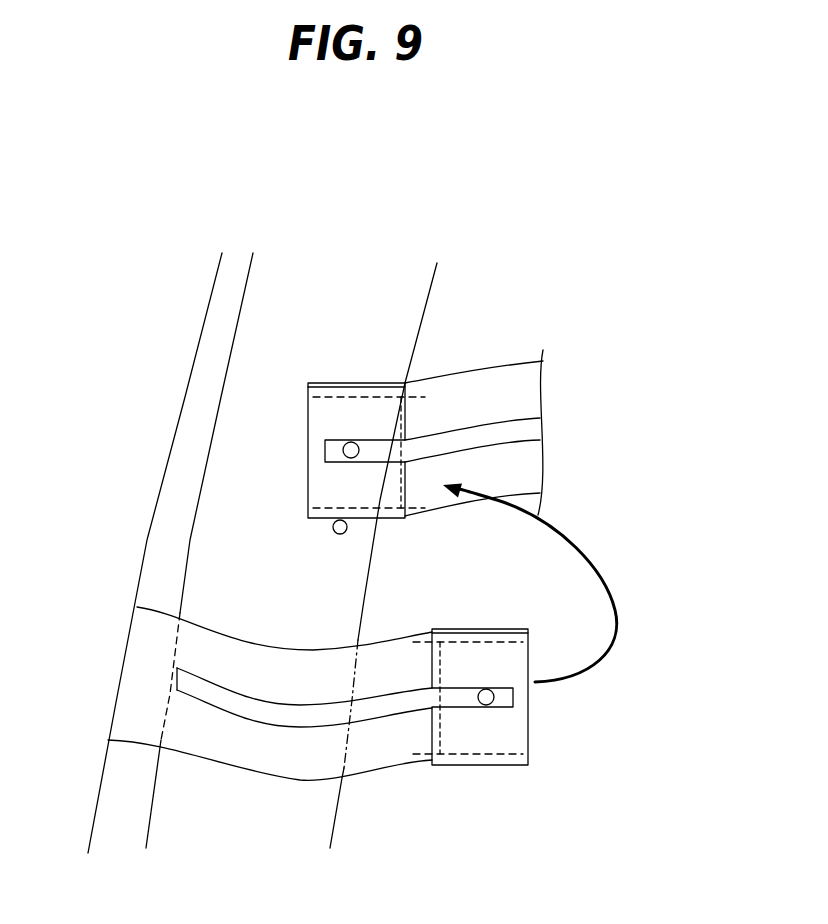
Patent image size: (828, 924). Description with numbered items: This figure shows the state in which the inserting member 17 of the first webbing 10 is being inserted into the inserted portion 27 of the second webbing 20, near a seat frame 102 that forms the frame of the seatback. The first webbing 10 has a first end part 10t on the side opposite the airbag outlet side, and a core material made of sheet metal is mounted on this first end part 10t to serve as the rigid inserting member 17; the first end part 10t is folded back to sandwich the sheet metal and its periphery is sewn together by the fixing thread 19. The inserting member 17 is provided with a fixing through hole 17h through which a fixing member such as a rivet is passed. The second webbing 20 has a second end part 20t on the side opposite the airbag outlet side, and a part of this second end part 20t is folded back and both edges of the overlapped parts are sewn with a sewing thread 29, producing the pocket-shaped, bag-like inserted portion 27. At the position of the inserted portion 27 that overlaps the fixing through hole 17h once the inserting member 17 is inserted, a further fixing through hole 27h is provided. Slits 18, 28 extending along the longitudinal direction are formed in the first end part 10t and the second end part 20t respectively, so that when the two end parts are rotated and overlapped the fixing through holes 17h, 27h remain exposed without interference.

The first webbing 10 is at (212, 622).
The first end part 10t is at (318, 614).
The slit 18 is at (283, 724).
The fixing thread 19 is at (437, 718).
The inserting member 17 is at (497, 765).
The fixing through hole 17h is at (490, 700).
The second webbing 20 is at (515, 362).
The second end part 20t is at (452, 320).
The inserted portion 27 is at (433, 410).
The fixing through hole 27h is at (351, 442).
The slit 28 is at (527, 437).
The sewing thread 29 is at (347, 380).
The seat frame 102 is at (315, 808).